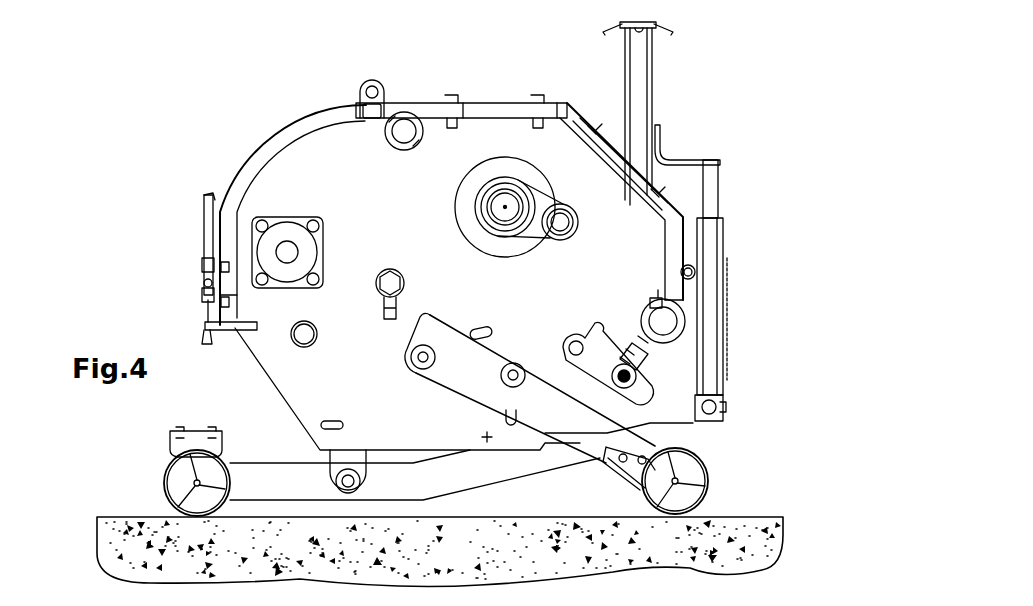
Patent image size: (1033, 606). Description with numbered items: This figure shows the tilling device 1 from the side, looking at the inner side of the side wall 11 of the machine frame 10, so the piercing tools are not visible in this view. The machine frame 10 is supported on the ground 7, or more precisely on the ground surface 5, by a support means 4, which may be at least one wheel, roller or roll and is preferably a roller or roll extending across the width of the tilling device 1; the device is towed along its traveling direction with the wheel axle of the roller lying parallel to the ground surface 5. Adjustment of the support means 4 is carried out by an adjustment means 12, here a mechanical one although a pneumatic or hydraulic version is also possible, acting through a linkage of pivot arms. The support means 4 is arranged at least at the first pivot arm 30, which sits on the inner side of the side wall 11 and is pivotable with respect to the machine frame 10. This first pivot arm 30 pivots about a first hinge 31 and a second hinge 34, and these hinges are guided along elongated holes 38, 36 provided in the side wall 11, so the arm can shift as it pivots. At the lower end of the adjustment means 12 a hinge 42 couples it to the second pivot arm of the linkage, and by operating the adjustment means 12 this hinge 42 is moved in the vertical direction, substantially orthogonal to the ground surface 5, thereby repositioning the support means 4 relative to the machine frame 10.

The tilling device 1 is at (201, 124).
The support means 4 is at (738, 477).
The ground surface 5 is at (123, 516).
The ground 7 is at (130, 543).
The machine frame 10 is at (477, 94).
The side wall 11 is at (445, 165).
The adjustment means 12 is at (735, 210).
The first pivot arm 30 is at (605, 437).
The first hinge 31 is at (411, 361).
The second hinge 34 is at (514, 364).
The elongated hole 36 is at (510, 418).
The elongated hole 38 is at (483, 329).
The hinge 42 is at (728, 402).